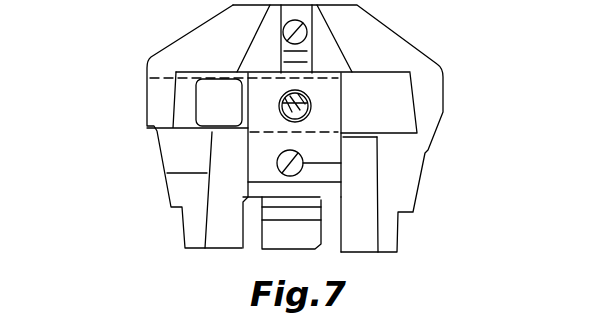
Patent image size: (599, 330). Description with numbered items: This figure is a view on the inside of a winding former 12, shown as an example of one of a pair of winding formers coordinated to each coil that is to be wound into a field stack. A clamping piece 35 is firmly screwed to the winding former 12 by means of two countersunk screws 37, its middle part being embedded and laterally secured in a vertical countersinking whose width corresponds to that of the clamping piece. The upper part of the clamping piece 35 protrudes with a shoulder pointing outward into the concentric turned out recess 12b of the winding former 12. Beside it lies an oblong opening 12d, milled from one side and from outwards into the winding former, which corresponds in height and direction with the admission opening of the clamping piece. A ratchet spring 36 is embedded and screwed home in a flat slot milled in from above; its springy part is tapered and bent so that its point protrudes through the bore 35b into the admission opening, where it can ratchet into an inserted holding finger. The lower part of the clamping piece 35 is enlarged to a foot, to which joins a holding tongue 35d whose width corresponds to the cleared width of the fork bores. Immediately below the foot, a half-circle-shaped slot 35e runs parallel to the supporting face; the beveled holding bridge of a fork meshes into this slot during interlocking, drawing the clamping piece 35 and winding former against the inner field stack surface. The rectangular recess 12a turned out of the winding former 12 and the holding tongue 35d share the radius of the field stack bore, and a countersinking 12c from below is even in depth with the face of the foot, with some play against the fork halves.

The winding former 12 is at (405, 60).
The rectangular recess 12a is at (398, 222).
The concentric turned out recess 12b is at (398, 108).
The countersinking 12c is at (330, 241).
The oblong opening 12d is at (158, 105).
The clamping piece 35 is at (252, 146).
The bore 35b is at (311, 112).
The holding tongue 35d is at (262, 233).
The half-circle-shaped slot 35e is at (265, 205).
The ratchet spring 36 is at (302, 54).
The countersunk screws 37 is at (277, 170).